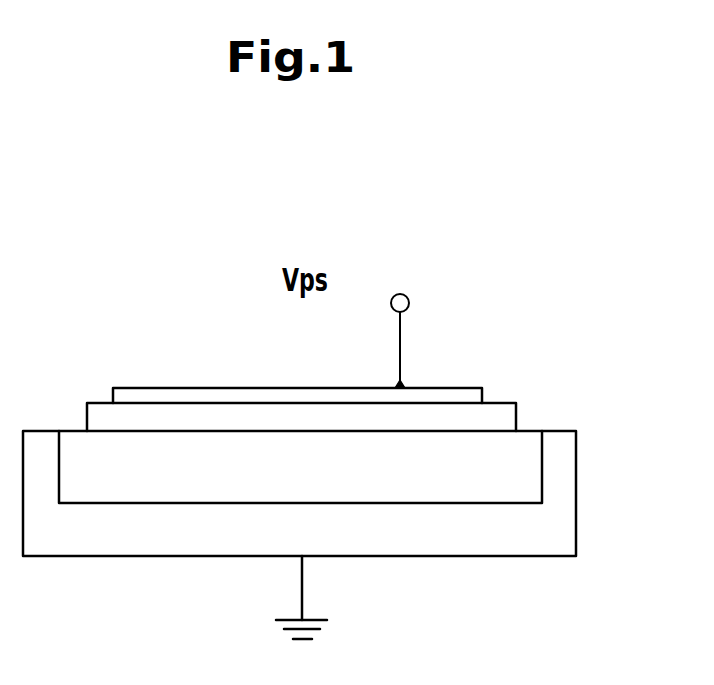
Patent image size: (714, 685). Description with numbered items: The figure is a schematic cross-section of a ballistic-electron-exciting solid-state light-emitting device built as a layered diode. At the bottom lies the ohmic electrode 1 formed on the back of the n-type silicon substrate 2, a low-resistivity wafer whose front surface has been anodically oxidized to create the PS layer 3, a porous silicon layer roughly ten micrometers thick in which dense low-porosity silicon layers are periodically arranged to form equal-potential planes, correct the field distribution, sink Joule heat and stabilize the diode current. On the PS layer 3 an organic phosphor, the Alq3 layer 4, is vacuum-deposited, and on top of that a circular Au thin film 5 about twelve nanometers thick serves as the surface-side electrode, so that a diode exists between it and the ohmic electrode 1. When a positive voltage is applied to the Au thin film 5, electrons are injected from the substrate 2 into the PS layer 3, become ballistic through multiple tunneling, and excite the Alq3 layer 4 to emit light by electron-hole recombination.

The ohmic electrode 1 is at (302, 602).
The n-type silicon substrate 2 is at (552, 530).
The PS layer 3 is at (530, 459).
The Alq3 layer 4 is at (496, 420).
The Au thin film 5 is at (452, 395).